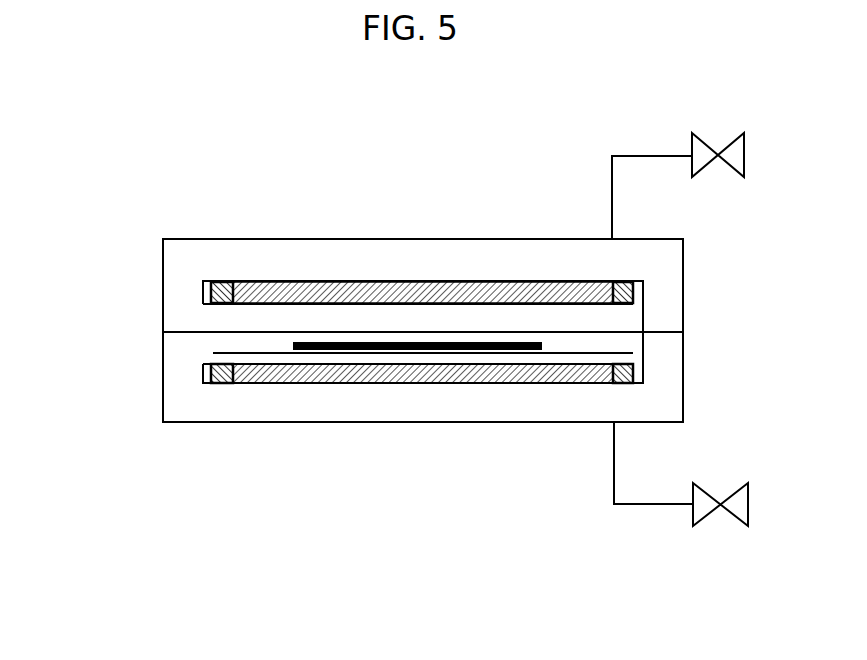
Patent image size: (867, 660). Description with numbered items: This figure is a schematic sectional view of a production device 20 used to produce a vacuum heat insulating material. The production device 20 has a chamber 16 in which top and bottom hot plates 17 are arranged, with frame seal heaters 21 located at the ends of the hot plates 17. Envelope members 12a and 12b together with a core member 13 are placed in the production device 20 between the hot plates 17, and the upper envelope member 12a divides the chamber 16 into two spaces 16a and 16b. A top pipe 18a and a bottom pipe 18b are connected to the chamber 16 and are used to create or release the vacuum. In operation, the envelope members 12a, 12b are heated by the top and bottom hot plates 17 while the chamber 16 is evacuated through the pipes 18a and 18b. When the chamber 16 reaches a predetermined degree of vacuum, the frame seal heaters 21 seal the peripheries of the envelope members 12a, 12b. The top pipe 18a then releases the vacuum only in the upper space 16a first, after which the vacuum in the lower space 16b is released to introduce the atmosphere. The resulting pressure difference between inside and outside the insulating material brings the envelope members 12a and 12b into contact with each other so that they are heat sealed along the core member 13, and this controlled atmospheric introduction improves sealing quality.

The production device 20 is at (323, 220).
The chamber 16 is at (222, 238).
The space 16a is at (222, 323).
The space 16b is at (213, 342).
The envelope member 12a is at (590, 327).
The envelope member 12b is at (590, 362).
The core member 13 is at (355, 350).
The hot plate 17 is at (467, 296).
The frame seal heater 21 is at (212, 282).
The top pipe 18a is at (603, 157).
The bottom pipe 18b is at (625, 516).